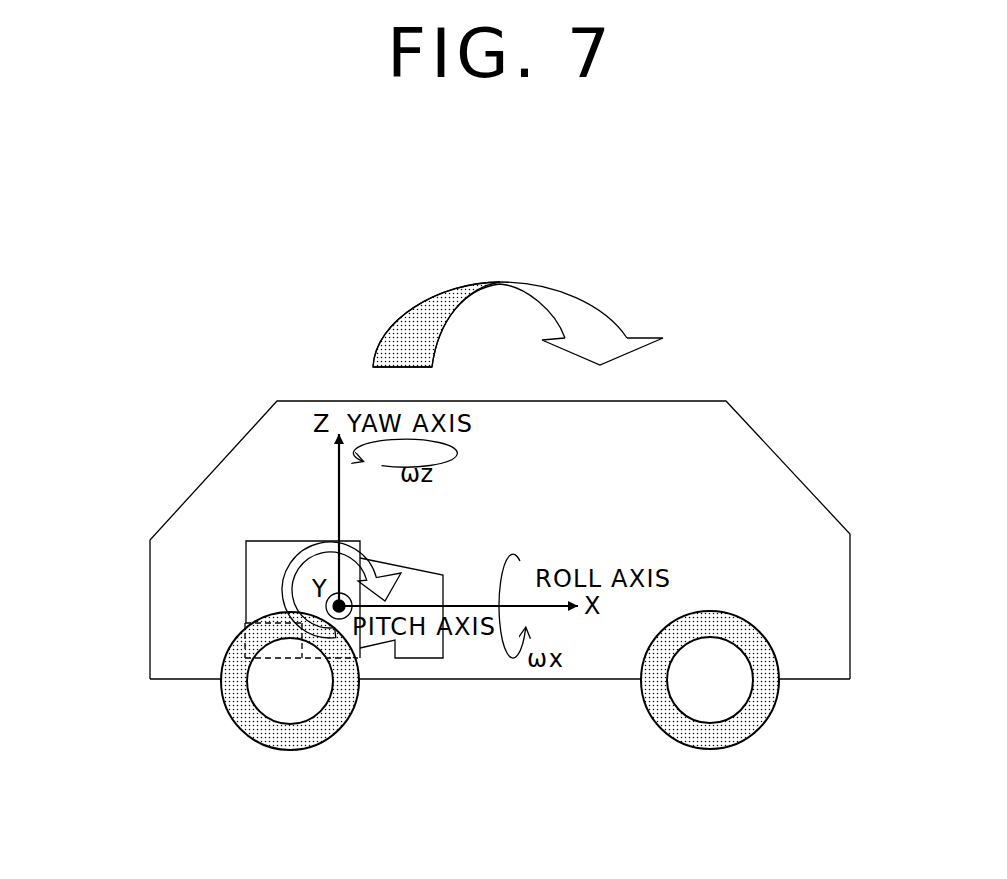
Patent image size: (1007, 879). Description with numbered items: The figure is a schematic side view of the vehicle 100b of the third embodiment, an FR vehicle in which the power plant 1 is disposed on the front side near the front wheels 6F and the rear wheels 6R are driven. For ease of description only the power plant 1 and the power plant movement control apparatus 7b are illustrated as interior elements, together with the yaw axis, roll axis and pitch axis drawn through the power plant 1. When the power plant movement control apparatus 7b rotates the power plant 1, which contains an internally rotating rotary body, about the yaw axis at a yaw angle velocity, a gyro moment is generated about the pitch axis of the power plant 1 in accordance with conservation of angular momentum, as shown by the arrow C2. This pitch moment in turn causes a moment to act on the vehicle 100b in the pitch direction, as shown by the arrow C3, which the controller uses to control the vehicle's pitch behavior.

The vehicle 100b is at (211, 391).
The power plant 1 is at (247, 580).
The power plant movement control apparatus 7b is at (415, 650).
The front wheels 6F is at (291, 750).
The rear wheels 6R is at (708, 749).
The arrow indicating gyro moment about the pitch axis C2 is at (347, 585).
The arrow indicating moment acting on the vehicle in the pitch direction C3 is at (536, 294).